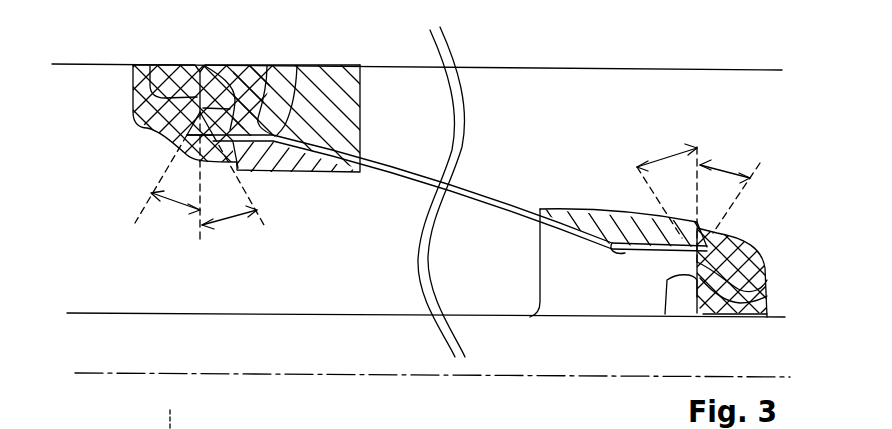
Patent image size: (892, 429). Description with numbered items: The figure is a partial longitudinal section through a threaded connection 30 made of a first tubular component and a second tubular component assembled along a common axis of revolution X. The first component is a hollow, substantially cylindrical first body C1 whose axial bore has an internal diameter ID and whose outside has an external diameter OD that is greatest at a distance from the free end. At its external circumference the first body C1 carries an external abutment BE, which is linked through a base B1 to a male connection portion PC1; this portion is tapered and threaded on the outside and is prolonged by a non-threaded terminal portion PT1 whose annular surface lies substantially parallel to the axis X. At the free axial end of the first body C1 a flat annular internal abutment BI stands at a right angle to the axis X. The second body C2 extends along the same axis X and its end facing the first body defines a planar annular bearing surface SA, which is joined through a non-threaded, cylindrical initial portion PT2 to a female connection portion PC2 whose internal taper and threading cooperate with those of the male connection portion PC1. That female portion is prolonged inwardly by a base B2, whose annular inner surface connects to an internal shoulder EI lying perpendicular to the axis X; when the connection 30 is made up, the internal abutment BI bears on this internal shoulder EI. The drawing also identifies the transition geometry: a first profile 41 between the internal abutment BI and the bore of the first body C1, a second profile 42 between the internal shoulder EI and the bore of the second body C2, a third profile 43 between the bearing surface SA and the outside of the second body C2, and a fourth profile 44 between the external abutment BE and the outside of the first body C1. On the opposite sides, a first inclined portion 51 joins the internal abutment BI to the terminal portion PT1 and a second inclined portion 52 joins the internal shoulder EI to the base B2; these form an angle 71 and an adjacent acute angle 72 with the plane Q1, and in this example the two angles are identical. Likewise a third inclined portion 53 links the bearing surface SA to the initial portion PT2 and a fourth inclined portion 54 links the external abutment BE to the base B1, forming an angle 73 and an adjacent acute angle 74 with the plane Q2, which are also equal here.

The threaded connection 30 is at (324, 304).
The first profile 41 is at (697, 314).
The second profile 42 is at (705, 314).
The third profile 43 is at (204, 66).
The fourth profile 44 is at (198, 70).
The first inclined portion 51 is at (695, 255).
The second inclined portion 52 is at (762, 257).
The third inclined portion 53 is at (266, 66).
The fourth inclined portion 54 is at (148, 127).
The angle 71 is at (658, 160).
The angle 72 is at (730, 170).
The angle 73 is at (225, 226).
The angle 74 is at (185, 205).
The external diameter OD is at (90, 110).
The internal diameter ID is at (83, 316).
The axis of revolution X is at (522, 375).
The first body C1 is at (118, 290).
The second body C2 is at (550, 106).
The external abutment BE is at (150, 66).
The bearing surface SA is at (213, 100).
The initial portion PT2 is at (297, 66).
The female connection portion PC2 is at (417, 172).
The male connection portion PC1 is at (380, 175).
The terminal portion PT1 is at (657, 252).
The base B1 is at (240, 168).
The base B2 is at (612, 243).
The plane Q1 is at (697, 218).
The plane Q2 is at (200, 240).
The internal abutment BI is at (760, 278).
The internal shoulder EI is at (663, 318).